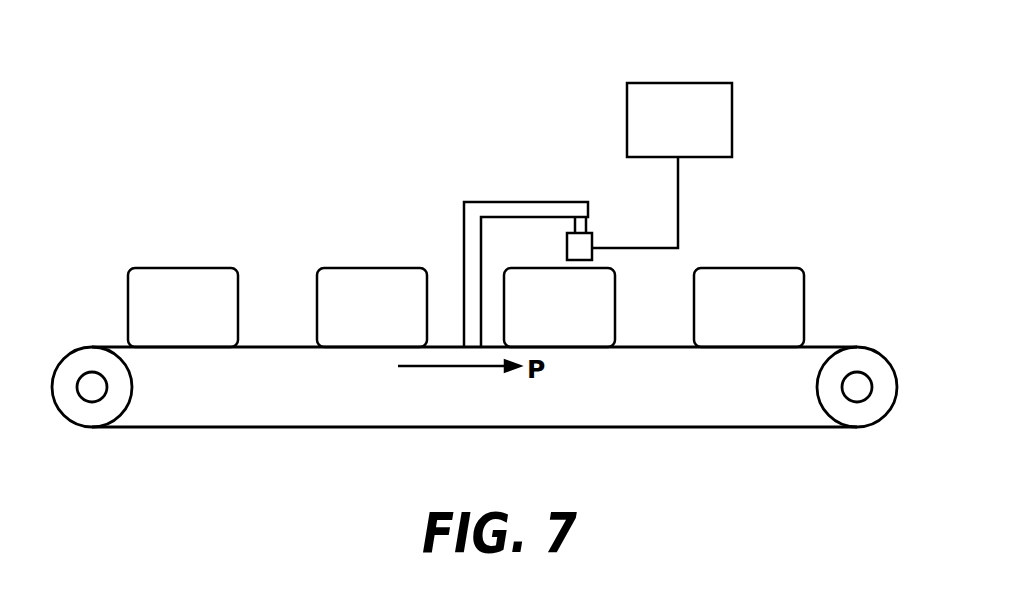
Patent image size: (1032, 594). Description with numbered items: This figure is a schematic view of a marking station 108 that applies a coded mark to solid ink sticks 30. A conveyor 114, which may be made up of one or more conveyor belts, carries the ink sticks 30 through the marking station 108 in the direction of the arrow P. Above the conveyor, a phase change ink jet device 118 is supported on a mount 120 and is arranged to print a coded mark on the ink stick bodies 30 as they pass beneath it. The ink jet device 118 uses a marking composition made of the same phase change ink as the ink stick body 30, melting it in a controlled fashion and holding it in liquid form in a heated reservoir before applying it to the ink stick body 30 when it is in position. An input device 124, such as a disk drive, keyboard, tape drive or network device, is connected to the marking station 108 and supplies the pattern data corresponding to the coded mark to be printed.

The solid ink stick 30 is at (128, 300).
The marking station 108 is at (196, 188).
The conveyor 114 is at (207, 427).
The phase change ink jet device 118 is at (590, 233).
The mount 120 is at (515, 202).
The input device 124 is at (679, 83).